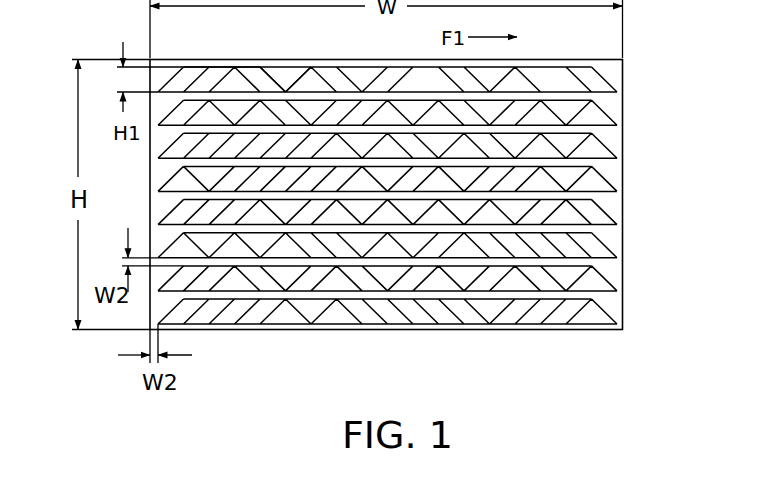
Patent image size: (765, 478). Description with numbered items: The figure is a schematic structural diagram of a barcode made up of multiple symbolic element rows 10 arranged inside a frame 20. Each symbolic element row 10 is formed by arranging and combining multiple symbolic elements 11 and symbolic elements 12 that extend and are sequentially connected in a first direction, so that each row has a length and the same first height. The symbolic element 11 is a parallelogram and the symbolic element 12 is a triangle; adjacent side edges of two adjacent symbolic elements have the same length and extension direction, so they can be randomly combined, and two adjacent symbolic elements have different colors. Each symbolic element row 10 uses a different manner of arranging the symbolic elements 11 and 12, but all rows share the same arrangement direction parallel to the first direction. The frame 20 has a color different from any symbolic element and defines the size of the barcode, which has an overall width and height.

The symbolic element row 10 is at (603, 77).
The symbolic element 11 is at (198, 65).
The symbolic element 12 is at (287, 65).
The frame 20 is at (519, 333).